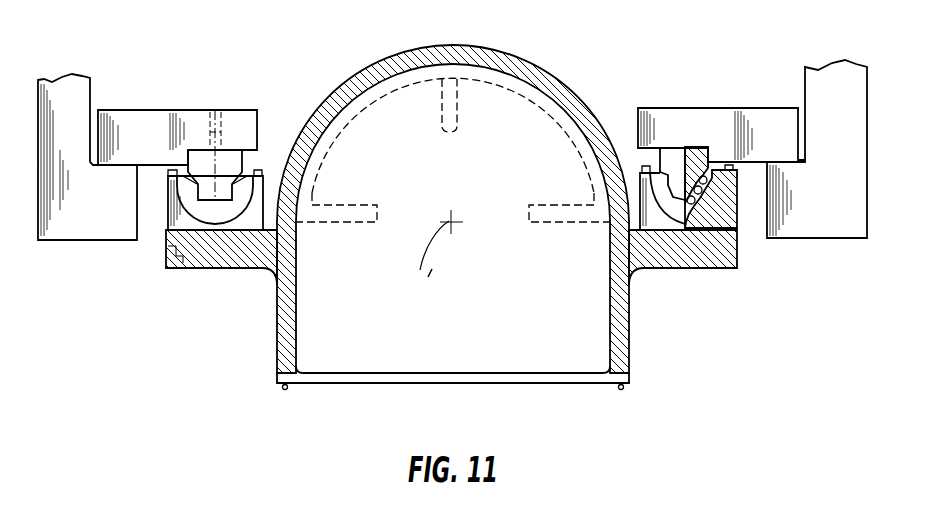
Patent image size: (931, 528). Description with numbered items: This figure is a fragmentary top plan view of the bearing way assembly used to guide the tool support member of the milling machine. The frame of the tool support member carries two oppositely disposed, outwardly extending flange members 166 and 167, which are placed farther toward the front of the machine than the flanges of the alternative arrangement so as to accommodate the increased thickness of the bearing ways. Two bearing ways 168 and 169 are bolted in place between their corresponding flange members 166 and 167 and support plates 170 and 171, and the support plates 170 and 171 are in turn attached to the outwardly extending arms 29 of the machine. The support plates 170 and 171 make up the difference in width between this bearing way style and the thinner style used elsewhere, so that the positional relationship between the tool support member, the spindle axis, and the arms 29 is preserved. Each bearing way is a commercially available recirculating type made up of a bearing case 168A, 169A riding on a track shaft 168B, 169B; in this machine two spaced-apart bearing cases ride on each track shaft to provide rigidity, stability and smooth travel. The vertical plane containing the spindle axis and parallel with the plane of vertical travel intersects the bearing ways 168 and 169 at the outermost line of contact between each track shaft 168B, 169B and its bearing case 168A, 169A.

The outwardly extending arms 29 is at (80, 230).
The flange member 166 is at (233, 262).
The flange member 167 is at (697, 253).
The bearing way 168 is at (165, 213).
The bearing case 168A is at (258, 196).
The track shaft 168B is at (228, 160).
The bearing way 169 is at (742, 219).
The bearing case 169A is at (650, 193).
The track shaft 169B is at (677, 157).
The support plate 170 is at (146, 128).
The support plate 171 is at (752, 120).